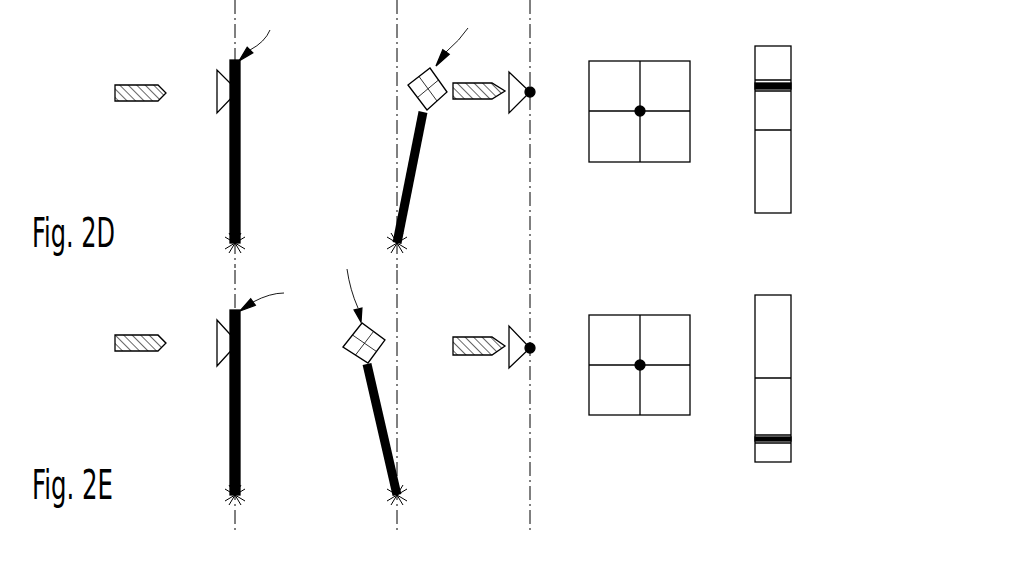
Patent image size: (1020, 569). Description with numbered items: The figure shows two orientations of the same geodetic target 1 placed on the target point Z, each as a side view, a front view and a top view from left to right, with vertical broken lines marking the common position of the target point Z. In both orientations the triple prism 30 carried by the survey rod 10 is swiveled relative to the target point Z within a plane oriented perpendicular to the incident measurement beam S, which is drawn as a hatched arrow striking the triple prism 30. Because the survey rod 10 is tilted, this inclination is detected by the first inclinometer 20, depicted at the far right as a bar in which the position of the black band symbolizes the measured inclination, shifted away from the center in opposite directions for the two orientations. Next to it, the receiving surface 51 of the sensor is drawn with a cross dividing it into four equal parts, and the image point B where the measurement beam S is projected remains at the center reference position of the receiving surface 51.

In FIG. 2D, the geodetic target 1 is at (356, 34).
In FIG. 2E, the geodetic target 1 is at (301, 282).
In FIG. 2D, the survey rod 10 is at (240, 172).
In FIG. 2E, the survey rod 10 is at (240, 421).
In FIG. 2D, the first inclinometer 20 is at (792, 66).
In FIG. 2E, the first inclinometer 20 is at (792, 318).
In FIG. 2D, the triple prism 30 is at (216, 73).
In FIG. 2E, the triple prism 30 is at (216, 322).
In FIG. 2D, the receiving surface 51 is at (690, 60).
In FIG. 2E, the receiving surface 51 is at (690, 314).
In FIG. 2D, the incident measurement beam S is at (135, 82).
In FIG. 2E, the incident measurement beam S is at (135, 333).
In FIG. 2D, the target point Z is at (241, 243).
In FIG. 2E, the target point Z is at (241, 495).
In FIG. 2D, the image point B is at (646, 113).
In FIG. 2E, the image point B is at (646, 367).